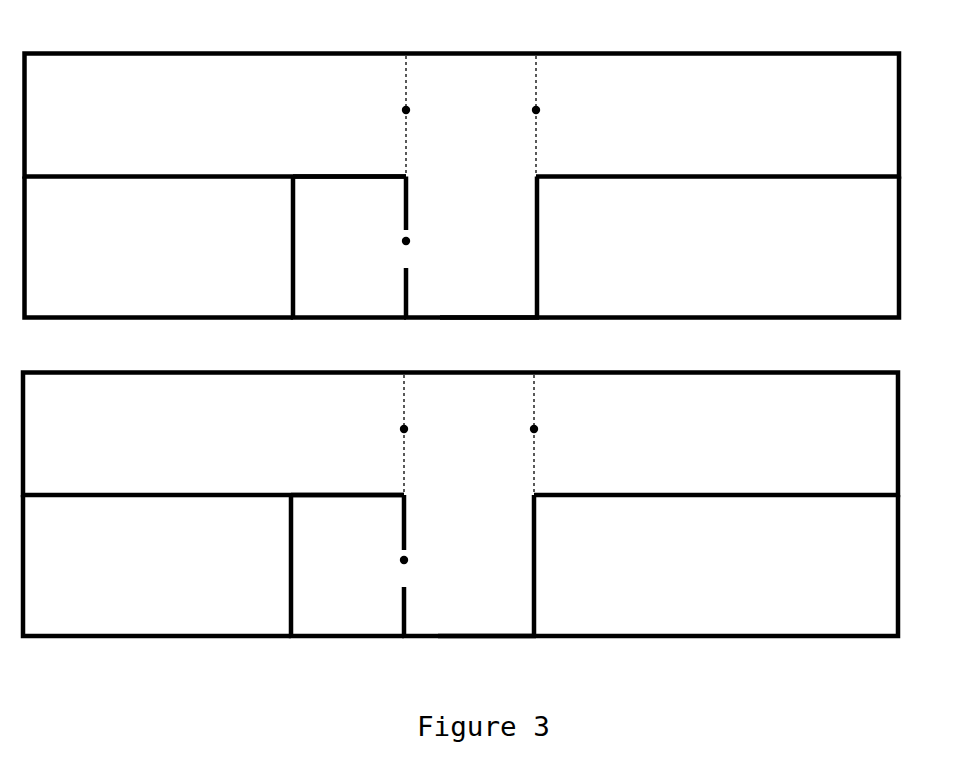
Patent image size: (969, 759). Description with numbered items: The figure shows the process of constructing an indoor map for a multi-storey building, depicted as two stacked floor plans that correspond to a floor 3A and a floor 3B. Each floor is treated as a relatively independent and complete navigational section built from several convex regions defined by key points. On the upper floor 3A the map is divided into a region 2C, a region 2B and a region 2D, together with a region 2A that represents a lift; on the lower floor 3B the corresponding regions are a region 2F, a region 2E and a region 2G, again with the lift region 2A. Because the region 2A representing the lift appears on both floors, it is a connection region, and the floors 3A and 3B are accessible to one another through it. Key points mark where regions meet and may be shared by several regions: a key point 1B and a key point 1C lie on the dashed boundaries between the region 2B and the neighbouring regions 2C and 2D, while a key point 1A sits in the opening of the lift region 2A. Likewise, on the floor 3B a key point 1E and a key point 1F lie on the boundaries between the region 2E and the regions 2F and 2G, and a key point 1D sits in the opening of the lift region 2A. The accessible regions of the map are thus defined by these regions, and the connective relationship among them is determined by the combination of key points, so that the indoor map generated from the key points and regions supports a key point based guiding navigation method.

The key point 1A is at (406, 247).
The key point 1B is at (406, 116).
The key point 1C is at (536, 116).
The key point 1D is at (404, 566).
The key point 1E is at (404, 435).
The key point 1F is at (534, 435).
The connection region 2A is at (348, 407).
The region 2B is at (471, 186).
The region 2C is at (216, 115).
The region 2D is at (717, 115).
The region 2E is at (469, 505).
The region 2F is at (213, 434).
The region 2G is at (716, 434).
The floor 3A is at (465, 320).
The floor 3B is at (463, 639).